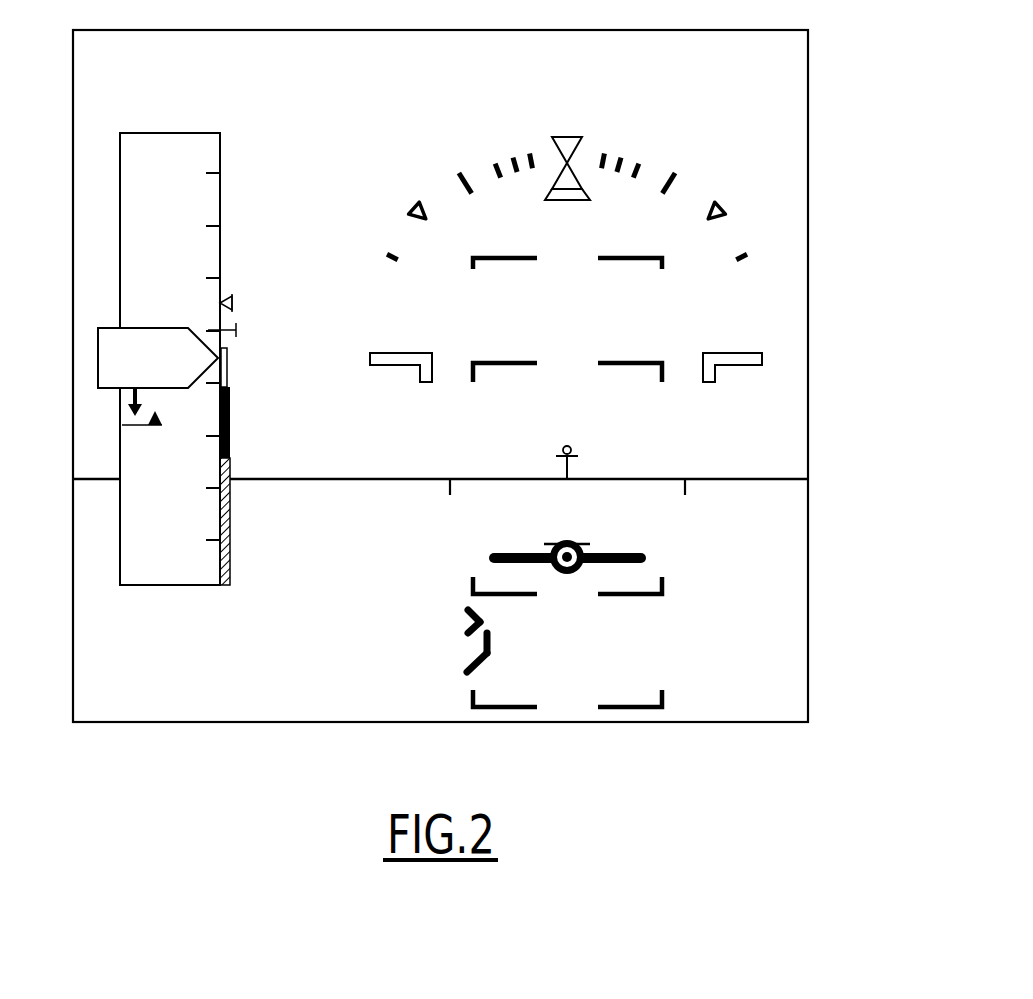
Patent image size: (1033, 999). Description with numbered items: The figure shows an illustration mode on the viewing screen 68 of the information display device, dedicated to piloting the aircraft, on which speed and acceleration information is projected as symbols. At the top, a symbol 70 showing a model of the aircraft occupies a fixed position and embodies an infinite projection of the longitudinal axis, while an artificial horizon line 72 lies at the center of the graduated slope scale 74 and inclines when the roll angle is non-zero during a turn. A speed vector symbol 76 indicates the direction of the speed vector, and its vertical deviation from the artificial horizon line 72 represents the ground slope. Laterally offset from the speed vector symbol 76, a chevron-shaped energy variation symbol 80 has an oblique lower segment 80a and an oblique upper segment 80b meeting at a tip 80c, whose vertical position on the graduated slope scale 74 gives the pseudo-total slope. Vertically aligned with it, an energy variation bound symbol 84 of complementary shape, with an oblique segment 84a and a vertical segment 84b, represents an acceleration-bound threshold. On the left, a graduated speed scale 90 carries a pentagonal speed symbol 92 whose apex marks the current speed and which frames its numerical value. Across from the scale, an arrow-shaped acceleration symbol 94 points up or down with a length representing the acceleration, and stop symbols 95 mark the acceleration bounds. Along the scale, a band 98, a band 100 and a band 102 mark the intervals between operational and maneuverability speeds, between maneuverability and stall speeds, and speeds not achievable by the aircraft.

The viewing screen 68 is at (822, 118).
The aircraft model symbol 70 is at (762, 358).
The artificial horizon line 72 is at (810, 479).
The graduated slope scale 74 is at (661, 362).
The speed vector symbol 76 is at (642, 557).
The energy variation symbol 80 is at (474, 688).
The lower segment 80a is at (461, 636).
The upper segment 80b is at (462, 688).
The tip 80c is at (556, 699).
The energy variation bound symbol 84 is at (556, 700).
The oblique segment 84a is at (485, 668).
The vertical segment 84b is at (493, 650).
The graduated speed scale 90 is at (220, 147).
The speed symbol 92 is at (110, 369).
The acceleration symbol 94 is at (122, 395).
The stop symbols 95 is at (140, 426).
The first bands 98 is at (230, 367).
The second bands 100 is at (232, 428).
The bands 102 is at (232, 552).